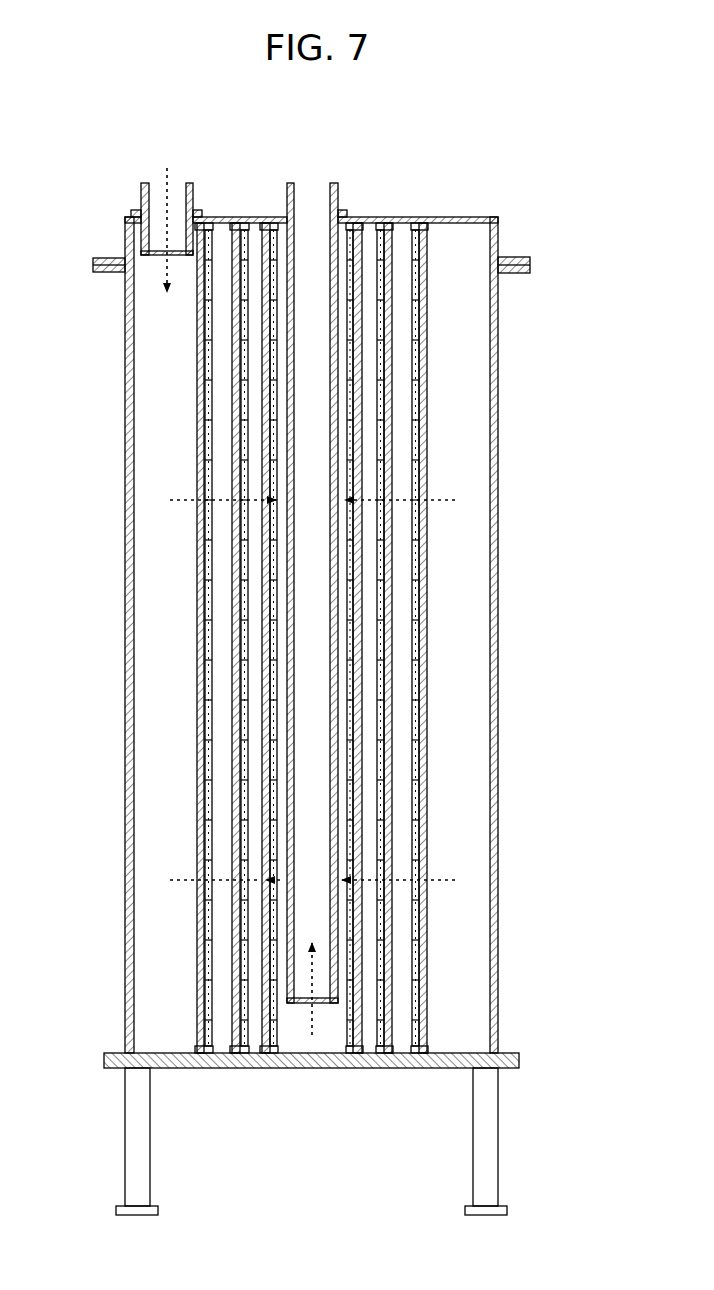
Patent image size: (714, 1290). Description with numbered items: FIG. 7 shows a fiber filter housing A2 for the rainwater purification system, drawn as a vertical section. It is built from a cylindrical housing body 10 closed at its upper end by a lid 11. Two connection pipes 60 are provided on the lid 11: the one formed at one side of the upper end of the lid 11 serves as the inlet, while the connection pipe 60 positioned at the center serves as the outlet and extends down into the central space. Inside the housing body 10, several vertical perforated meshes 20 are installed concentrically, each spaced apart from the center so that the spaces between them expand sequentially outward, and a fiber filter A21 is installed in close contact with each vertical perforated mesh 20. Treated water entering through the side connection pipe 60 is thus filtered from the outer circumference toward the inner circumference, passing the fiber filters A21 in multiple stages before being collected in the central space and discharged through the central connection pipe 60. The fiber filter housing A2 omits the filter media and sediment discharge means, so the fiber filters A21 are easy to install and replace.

The housing body 10 is at (498, 300).
The lid 11 is at (475, 218).
The connection pipe 60 is at (193, 193).
The vertical perforated mesh 20 is at (425, 568).
The fiber filter A21 is at (425, 545).
The fiber filter housing A2 is at (102, 203).